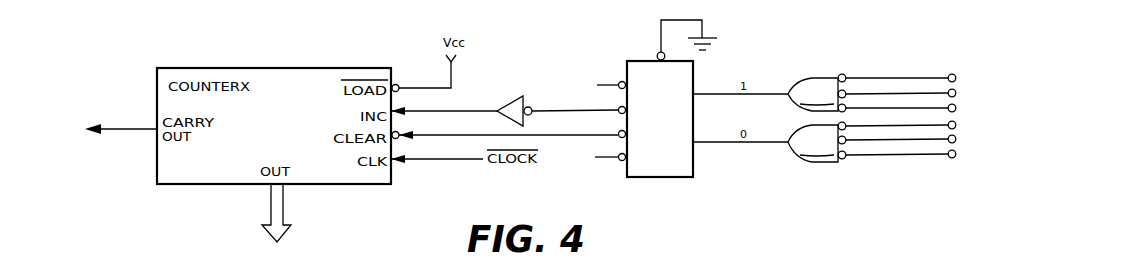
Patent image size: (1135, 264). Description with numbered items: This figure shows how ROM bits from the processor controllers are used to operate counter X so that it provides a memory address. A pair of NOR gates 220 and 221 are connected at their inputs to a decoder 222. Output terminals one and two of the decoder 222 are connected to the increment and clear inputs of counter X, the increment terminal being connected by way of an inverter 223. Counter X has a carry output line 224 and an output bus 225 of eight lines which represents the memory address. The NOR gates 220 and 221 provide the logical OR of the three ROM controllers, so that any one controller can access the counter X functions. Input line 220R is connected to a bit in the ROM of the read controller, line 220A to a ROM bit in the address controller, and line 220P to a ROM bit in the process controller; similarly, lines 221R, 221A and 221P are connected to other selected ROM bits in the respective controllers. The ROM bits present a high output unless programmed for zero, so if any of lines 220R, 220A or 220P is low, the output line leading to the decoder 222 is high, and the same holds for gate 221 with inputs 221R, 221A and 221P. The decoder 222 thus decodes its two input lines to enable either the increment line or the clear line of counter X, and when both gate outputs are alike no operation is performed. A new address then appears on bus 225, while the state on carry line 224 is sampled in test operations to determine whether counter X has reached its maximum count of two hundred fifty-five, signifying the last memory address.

The NOR gate 220 is at (817, 93).
The input line 220R is at (917, 78).
The input line 220A is at (890, 93).
The input line 220P is at (858, 108).
The NOR gate 221 is at (817, 142).
The input line 221R is at (873, 127).
The input line 221A is at (907, 141).
The input line 221P is at (928, 158).
The decoder 222 is at (696, 112).
The inverter 223 is at (514, 104).
The carry output line 224 is at (128, 131).
The output bus 225 is at (284, 216).